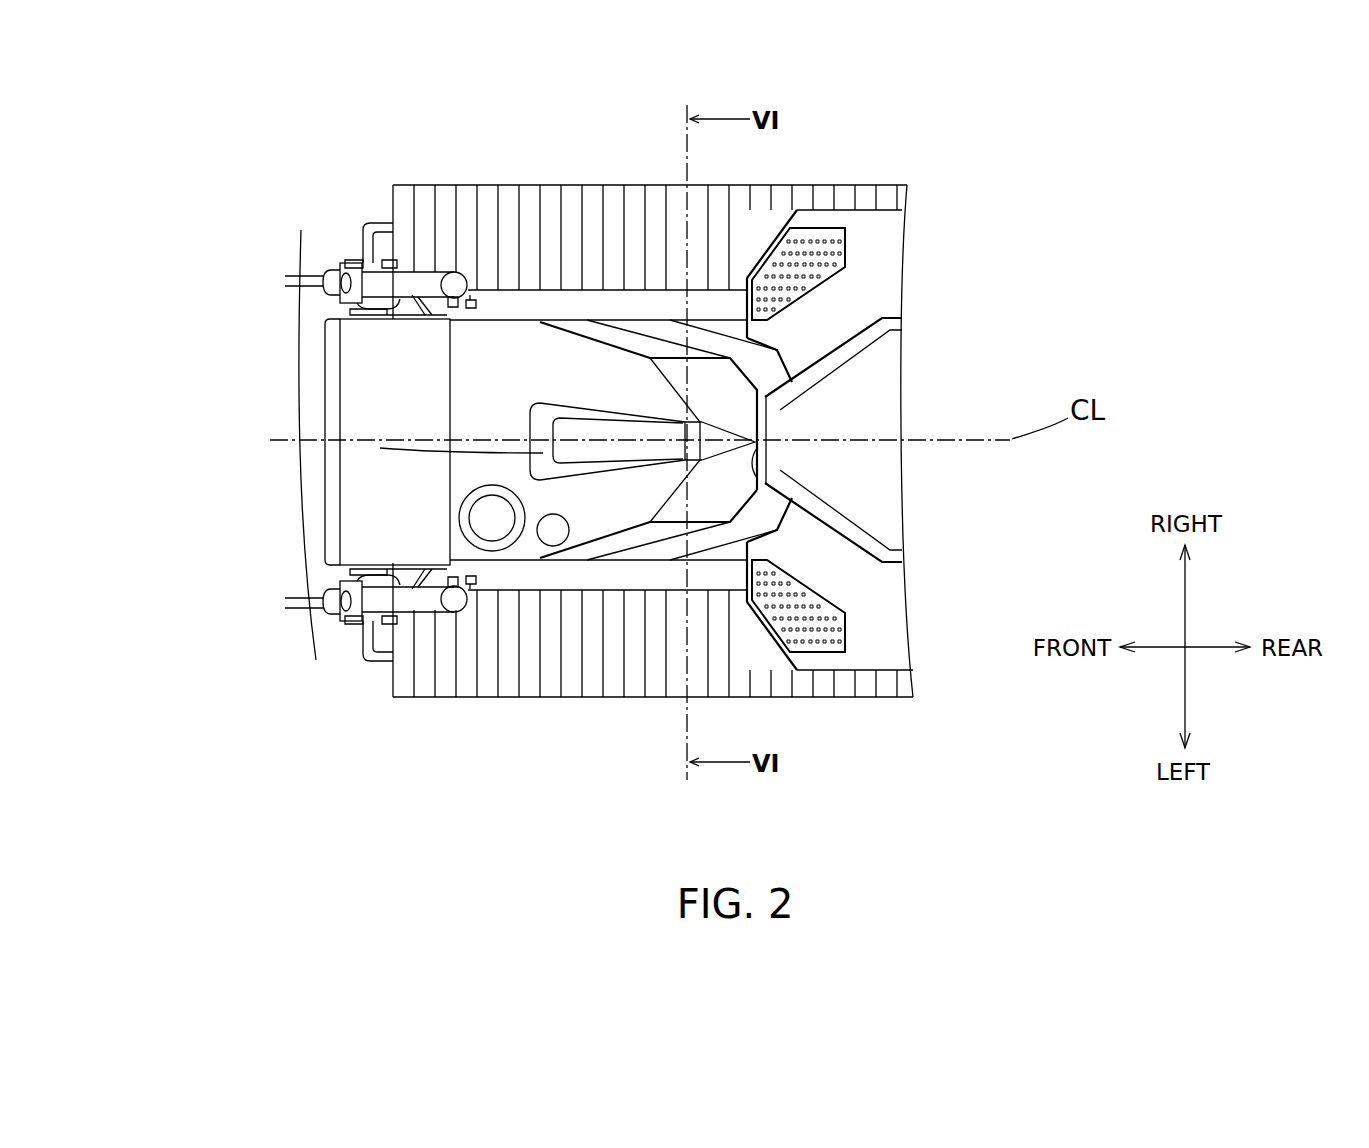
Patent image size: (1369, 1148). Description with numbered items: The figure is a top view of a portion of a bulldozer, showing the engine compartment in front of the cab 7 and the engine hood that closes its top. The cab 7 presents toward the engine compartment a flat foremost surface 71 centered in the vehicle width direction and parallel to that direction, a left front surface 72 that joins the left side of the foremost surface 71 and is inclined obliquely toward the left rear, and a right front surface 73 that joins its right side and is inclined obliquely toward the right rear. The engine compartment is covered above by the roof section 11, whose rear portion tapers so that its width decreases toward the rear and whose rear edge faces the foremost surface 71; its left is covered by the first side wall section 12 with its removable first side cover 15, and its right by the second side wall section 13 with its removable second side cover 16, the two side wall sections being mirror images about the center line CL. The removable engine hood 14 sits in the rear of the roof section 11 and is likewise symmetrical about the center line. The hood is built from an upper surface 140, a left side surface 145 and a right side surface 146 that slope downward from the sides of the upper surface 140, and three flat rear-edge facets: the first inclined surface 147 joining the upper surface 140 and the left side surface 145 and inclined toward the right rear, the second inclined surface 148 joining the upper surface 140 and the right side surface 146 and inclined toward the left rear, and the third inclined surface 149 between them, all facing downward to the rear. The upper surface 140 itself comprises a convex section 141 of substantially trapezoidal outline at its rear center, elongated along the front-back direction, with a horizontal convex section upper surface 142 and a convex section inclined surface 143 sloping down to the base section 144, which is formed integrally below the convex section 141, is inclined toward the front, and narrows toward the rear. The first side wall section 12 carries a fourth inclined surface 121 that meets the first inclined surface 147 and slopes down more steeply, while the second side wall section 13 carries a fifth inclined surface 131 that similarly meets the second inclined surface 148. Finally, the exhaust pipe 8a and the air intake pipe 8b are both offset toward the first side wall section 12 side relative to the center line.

The cab 7 is at (877, 380).
The exhaust pipe 8a is at (532, 566).
The air intake pipe 8b is at (462, 600).
The roof section 11 is at (518, 353).
The first side wall section 12 is at (490, 532).
The second side wall section 13 is at (549, 314).
The engine hood 14 is at (445, 355).
The first side cover 15 is at (657, 552).
The second side cover 16 is at (655, 330).
The foremost surface 71 is at (777, 480).
The left front surface 72 is at (812, 517).
The right front surface 73 is at (835, 322).
The fourth inclined surface 121 is at (862, 622).
The fifth inclined surface 131 is at (780, 367).
The upper surface 140 is at (112, 397).
The convex section 141 is at (190, 383).
The convex section upper surface 142 is at (532, 408).
The convex section inclined surface 143 is at (568, 433).
The base section 144 is at (463, 480).
The left side surface 145 is at (553, 532).
The right side surface 146 is at (605, 333).
The first inclined surface 147 is at (717, 498).
The second inclined surface 148 is at (725, 387).
The third inclined surface 149 is at (780, 410).